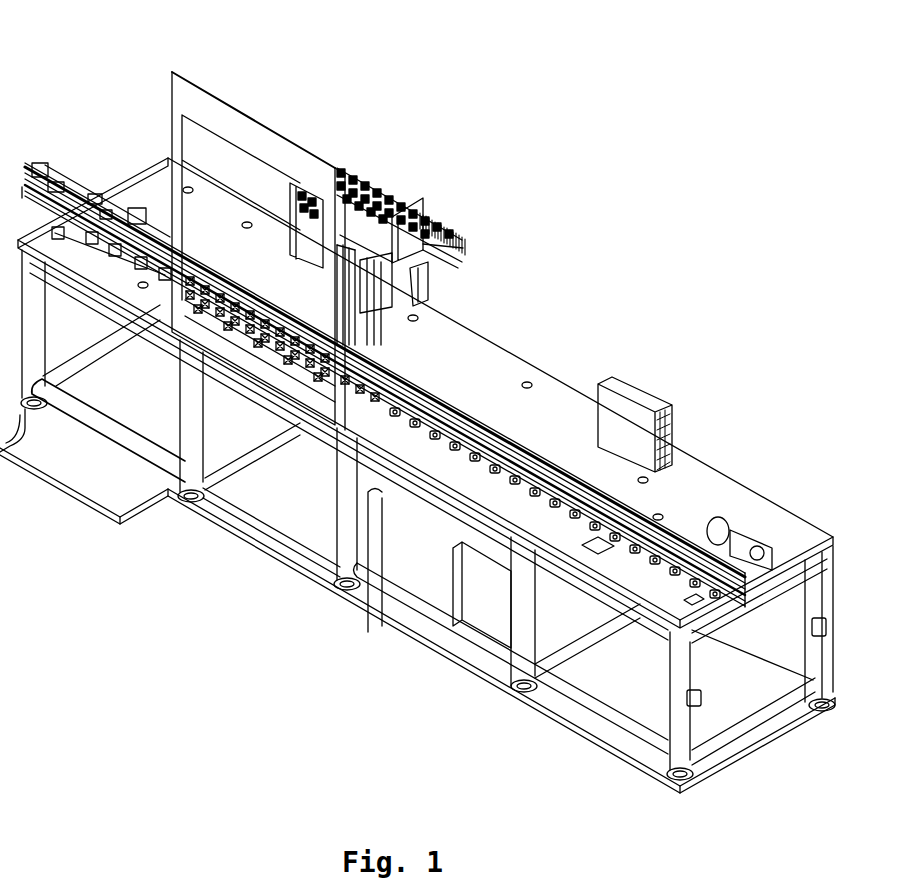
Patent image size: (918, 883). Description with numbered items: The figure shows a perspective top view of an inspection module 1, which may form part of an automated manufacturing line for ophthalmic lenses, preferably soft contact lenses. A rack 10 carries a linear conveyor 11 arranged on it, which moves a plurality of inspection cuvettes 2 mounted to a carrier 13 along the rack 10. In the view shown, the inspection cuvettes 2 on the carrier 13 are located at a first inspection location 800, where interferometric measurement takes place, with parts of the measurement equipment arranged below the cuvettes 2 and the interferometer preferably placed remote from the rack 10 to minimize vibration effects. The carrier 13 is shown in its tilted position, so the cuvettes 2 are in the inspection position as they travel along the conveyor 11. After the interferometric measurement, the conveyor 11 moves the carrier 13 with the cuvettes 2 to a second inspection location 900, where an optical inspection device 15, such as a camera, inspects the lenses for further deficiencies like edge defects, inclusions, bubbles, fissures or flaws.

The inspection module 1 is at (92, 91).
The inspection cuvettes 2 is at (286, 342).
The rack 10 is at (520, 372).
The linear conveyor 11 is at (453, 407).
The carrier 13 is at (380, 360).
The optical inspection device 15 is at (652, 397).
The first inspection location 800 is at (418, 126).
The second inspection location 900 is at (750, 216).